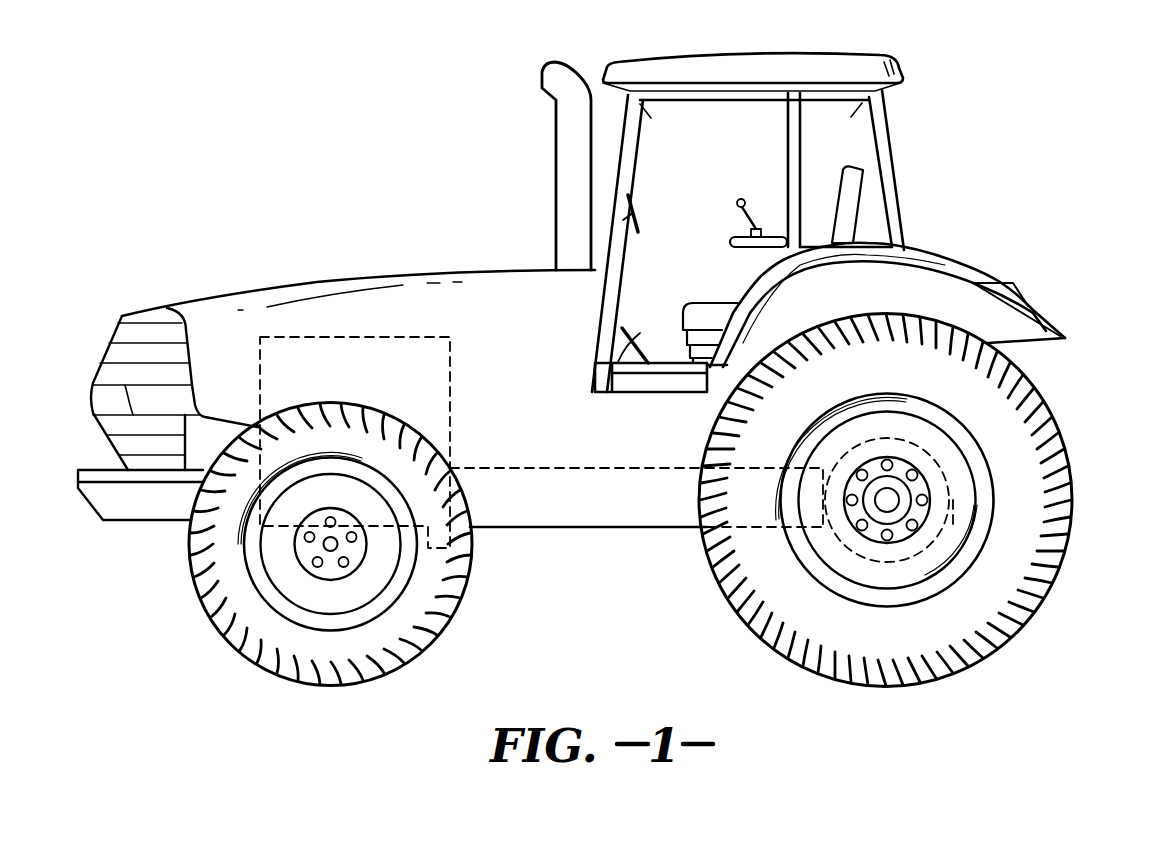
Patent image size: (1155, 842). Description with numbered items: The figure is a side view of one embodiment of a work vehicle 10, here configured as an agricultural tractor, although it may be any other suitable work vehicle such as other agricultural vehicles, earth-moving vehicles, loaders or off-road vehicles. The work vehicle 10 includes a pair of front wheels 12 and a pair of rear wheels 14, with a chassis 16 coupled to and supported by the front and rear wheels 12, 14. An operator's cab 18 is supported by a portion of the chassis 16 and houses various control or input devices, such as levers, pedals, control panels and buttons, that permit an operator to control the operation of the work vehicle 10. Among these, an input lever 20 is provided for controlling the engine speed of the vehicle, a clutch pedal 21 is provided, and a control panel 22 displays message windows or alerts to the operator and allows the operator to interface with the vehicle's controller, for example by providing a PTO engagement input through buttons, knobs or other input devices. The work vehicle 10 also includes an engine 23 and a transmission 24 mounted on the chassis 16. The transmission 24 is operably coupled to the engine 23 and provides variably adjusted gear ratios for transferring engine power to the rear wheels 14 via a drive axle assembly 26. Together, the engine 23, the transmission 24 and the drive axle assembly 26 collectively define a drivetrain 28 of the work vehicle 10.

The work vehicle 10 is at (263, 184).
The front wheels 12 is at (187, 558).
The rear wheels 14 is at (1073, 527).
The chassis 16 is at (533, 530).
The operator's cab 18 is at (893, 175).
The input lever 20 is at (736, 203).
The clutch pedal 21 is at (645, 345).
The control panel 22 is at (640, 200).
The engine 23 is at (330, 337).
The transmission 24 is at (595, 468).
The drive axle assembly 26 is at (953, 500).
The drivetrain 28 is at (503, 299).